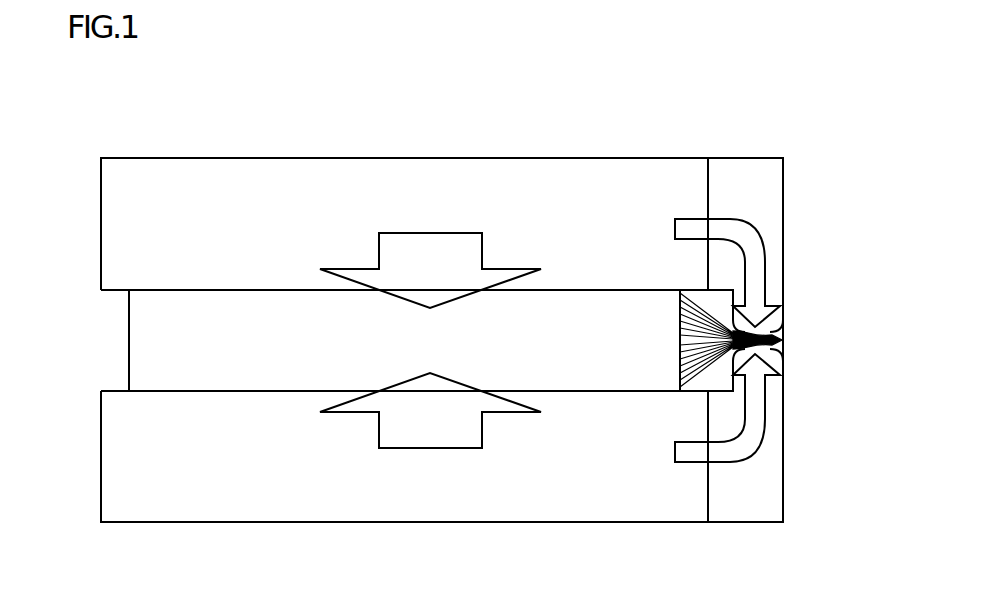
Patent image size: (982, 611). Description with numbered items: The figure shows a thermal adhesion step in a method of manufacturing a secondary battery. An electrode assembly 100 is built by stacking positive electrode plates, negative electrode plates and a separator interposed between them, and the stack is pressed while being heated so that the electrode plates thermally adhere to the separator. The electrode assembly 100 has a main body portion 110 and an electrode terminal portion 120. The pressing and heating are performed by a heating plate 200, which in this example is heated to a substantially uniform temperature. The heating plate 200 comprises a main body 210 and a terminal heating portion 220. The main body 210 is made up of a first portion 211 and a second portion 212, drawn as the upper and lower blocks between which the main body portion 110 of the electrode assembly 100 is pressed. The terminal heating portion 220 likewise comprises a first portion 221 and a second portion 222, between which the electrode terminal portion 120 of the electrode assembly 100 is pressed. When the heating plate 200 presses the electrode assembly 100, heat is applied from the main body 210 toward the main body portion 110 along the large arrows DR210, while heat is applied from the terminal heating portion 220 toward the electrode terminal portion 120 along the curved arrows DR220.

The electrode assembly 100 is at (665, 568).
The main body portion 110 is at (587, 370).
The electrode terminal portion 120 is at (693, 373).
The heating plate 200 is at (808, 82).
The main body 210 is at (583, 116).
The first portion 211 is at (506, 173).
The second portion 212 is at (558, 422).
The terminal heating portion 220 is at (837, 116).
The first portion 221 is at (759, 173).
The second portion 222 is at (765, 472).
The arrows DR210 is at (375, 248).
The arrows DR220 is at (690, 219).